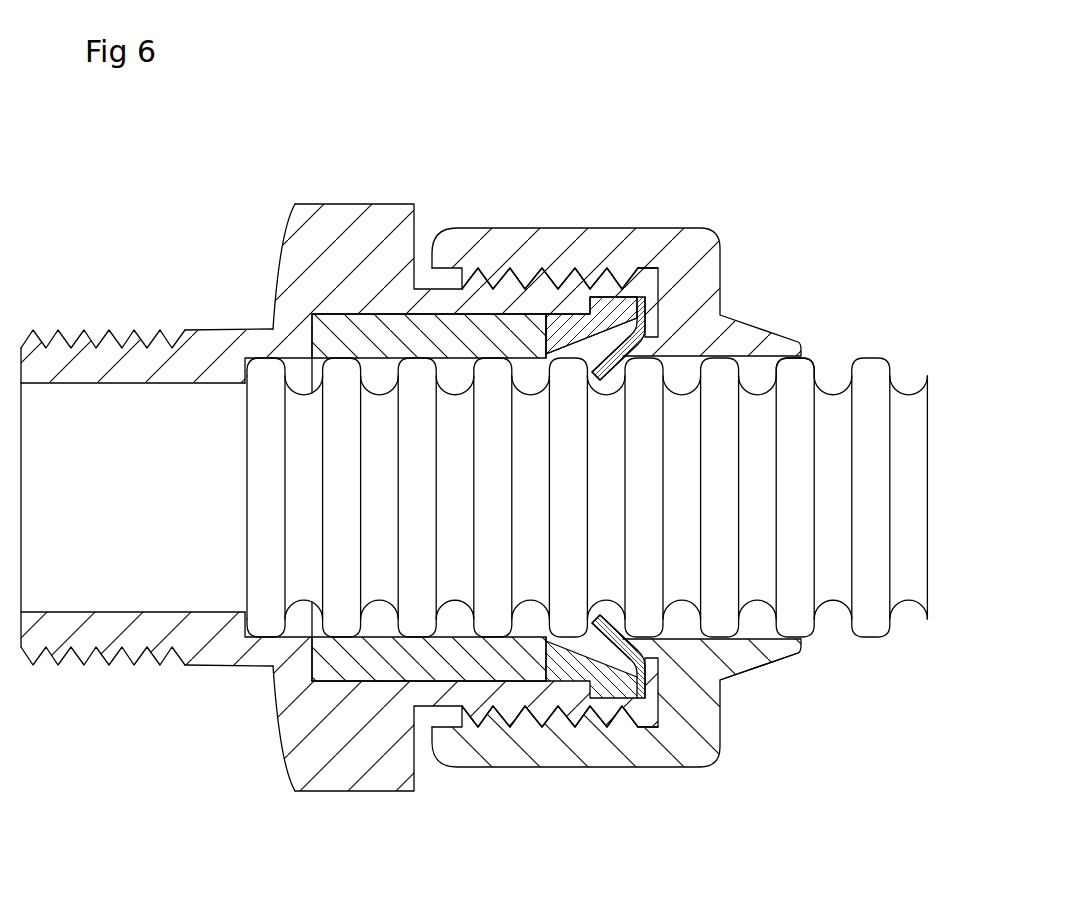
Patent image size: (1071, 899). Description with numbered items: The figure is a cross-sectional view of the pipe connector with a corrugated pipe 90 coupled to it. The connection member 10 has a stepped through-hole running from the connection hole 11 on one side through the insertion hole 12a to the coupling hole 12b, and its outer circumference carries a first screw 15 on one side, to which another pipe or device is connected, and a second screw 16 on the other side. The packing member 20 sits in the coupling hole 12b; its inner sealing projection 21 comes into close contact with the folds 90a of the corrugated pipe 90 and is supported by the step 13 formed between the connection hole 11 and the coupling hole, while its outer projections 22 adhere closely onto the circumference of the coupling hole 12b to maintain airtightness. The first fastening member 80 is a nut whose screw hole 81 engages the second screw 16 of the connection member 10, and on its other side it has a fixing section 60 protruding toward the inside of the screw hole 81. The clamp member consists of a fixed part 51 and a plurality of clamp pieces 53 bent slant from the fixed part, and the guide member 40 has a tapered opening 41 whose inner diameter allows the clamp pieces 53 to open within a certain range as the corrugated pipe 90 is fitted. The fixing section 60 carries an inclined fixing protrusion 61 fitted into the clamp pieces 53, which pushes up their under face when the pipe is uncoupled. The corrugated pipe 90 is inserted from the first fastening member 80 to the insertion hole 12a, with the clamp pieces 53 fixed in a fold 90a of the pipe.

The connection member 10 is at (344, 194).
The connection hole 11 is at (62, 610).
The insertion hole 12a is at (264, 372).
The coupling hole 12b is at (296, 670).
The step 13 is at (278, 352).
The first screw 15 is at (84, 328).
The second screw 16 is at (486, 268).
The packing member 20 is at (487, 634).
The sealing projection 21 is at (318, 392).
The outer projections 22 is at (452, 681).
The guide member 40 is at (608, 712).
The tapered opening 41 is at (596, 346).
The fixed part 51 is at (647, 308).
The clamp pieces 53 is at (604, 370).
The fixing section 60 is at (740, 672).
The inclined fixing protrusion 61 is at (630, 630).
The first fastening member 80 is at (730, 220).
The screw hole 81 is at (553, 268).
The corrugated pipe 90 is at (897, 350).
The folds 90a is at (820, 377).